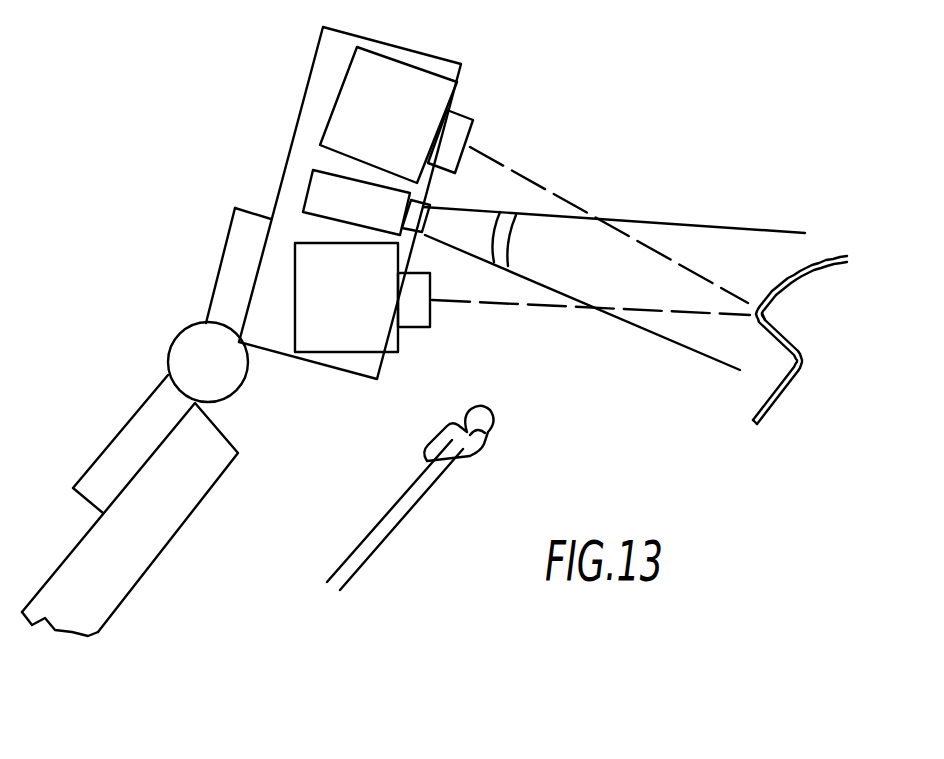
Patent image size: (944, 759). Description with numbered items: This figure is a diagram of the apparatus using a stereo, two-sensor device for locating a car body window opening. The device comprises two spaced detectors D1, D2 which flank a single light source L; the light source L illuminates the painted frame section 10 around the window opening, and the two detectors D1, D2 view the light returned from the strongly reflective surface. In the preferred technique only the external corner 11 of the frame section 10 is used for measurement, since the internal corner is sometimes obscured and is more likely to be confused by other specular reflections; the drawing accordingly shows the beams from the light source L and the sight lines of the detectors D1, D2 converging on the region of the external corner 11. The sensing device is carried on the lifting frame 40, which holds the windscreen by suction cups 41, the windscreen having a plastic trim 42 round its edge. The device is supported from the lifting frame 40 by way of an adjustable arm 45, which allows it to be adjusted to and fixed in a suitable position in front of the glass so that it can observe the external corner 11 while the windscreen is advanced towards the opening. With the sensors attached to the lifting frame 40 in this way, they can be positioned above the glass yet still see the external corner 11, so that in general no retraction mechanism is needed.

The frame section 10 is at (820, 267).
The external corner 11 is at (768, 317).
The first detector D1 is at (326, 108).
The second detector D2 is at (285, 277).
The light source L is at (305, 190).
The lifting frame 40 is at (207, 460).
The suction cups 41 is at (397, 517).
The plastic trim 42 is at (482, 445).
The adjustable arm 45 is at (100, 436).